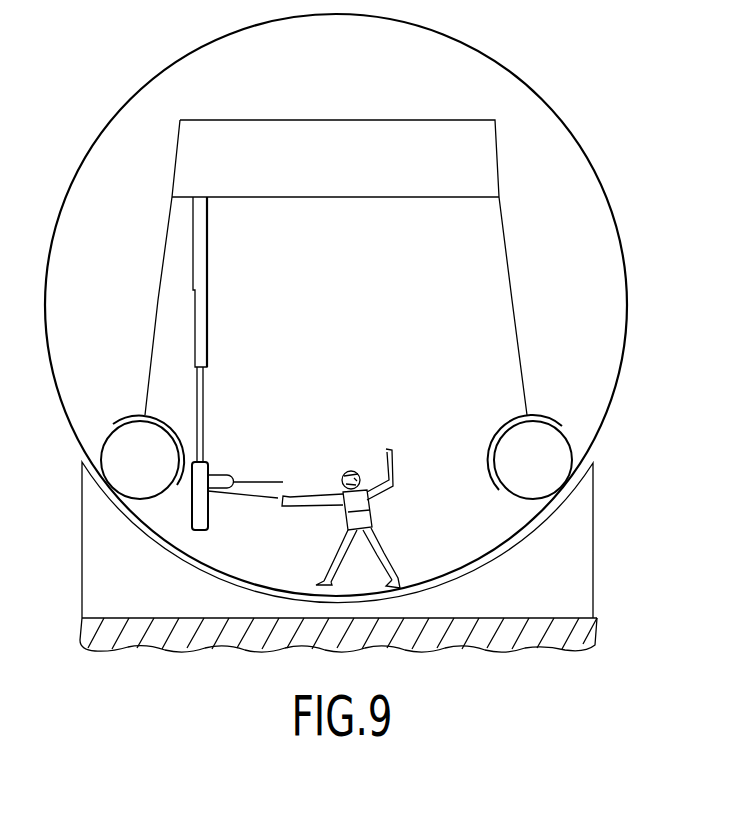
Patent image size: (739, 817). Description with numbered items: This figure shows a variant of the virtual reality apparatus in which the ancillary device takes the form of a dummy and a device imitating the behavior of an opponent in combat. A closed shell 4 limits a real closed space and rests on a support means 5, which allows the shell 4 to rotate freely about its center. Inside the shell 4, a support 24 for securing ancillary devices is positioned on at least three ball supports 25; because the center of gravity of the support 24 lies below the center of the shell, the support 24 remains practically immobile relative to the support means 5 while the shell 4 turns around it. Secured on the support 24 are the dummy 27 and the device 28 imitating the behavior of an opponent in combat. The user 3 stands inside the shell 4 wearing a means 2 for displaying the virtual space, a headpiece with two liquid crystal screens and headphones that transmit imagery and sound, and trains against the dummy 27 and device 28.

The means for displaying the virtual space 2 is at (345, 472).
The user 3 is at (362, 512).
The closed shell 4 is at (584, 151).
The support means 5 is at (623, 566).
The support for securing ancillary devices 24 is at (507, 250).
The ball supports 25 is at (125, 457).
The dummy 27 is at (200, 478).
The device imitating the behavior of an opponent in combat 28 is at (199, 243).